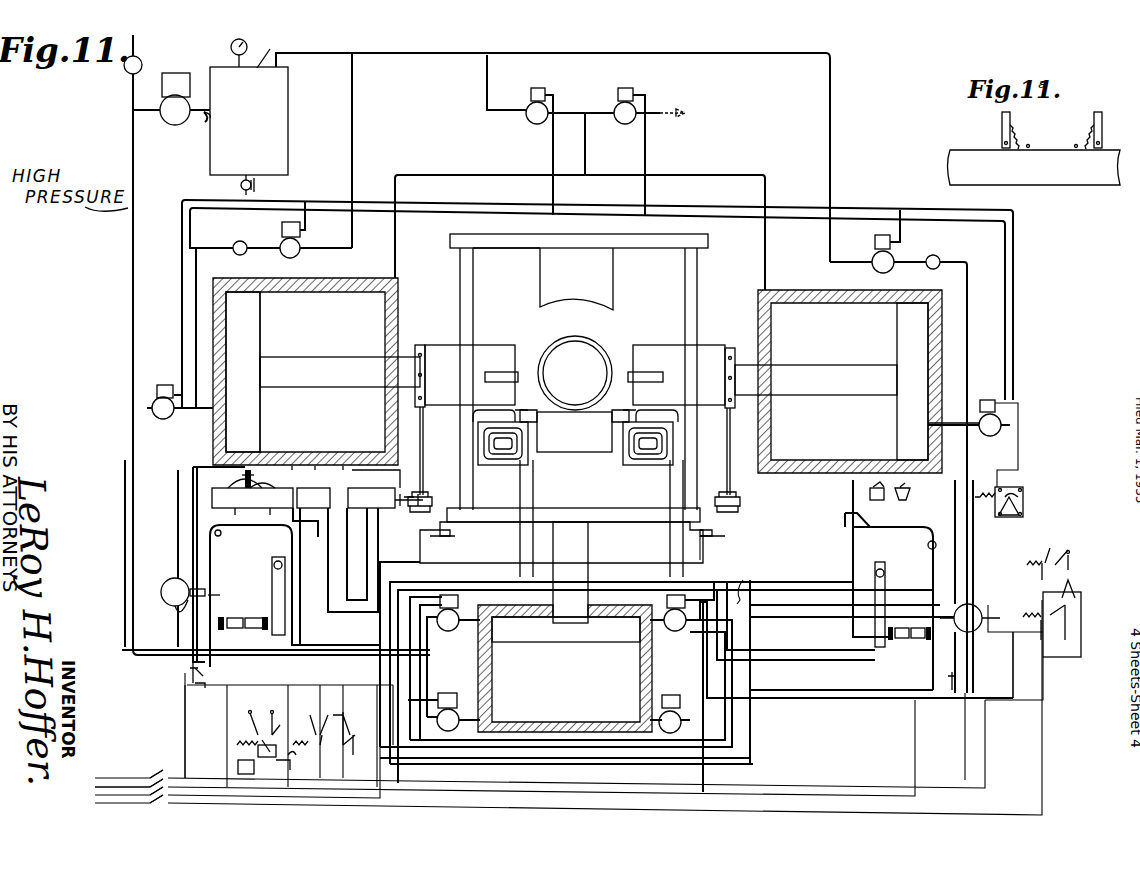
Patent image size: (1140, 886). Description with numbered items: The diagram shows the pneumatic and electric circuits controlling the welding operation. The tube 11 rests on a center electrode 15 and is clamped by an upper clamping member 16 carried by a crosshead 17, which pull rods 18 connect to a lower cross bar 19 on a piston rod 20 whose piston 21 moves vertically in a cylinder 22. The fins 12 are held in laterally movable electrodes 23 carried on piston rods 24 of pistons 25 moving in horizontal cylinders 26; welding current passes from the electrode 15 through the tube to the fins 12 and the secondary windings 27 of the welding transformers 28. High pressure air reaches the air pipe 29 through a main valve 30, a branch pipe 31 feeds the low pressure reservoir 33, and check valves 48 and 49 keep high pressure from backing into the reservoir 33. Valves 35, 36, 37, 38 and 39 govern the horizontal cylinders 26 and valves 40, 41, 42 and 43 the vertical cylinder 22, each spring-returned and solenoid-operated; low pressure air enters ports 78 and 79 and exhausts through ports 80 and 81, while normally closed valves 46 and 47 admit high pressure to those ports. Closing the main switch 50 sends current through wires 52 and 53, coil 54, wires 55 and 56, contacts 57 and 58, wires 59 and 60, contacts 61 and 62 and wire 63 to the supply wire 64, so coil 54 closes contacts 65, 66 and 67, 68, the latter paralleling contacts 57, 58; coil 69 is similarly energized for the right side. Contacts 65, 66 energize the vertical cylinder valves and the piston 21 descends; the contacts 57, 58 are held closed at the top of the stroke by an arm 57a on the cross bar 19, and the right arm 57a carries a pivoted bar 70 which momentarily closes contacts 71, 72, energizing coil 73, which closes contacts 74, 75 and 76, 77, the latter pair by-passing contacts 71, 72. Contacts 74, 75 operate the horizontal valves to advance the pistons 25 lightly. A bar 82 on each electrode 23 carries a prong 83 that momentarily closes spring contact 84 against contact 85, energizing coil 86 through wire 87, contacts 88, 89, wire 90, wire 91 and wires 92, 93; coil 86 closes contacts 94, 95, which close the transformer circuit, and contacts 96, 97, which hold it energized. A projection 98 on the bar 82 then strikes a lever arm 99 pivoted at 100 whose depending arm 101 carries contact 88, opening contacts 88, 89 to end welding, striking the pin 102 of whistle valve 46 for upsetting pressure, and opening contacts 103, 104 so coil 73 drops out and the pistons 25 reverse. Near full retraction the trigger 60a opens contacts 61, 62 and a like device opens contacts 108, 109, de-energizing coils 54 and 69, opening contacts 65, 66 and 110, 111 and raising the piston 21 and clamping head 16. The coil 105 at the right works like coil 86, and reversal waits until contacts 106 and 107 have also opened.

In FIG. 11, the tube 11 is at (572, 405).
In FIG. 11, the fins 12 is at (485, 377).
In FIG. 11, the center electrode 15 is at (574, 431).
In FIG. 11, the clamping member 16 is at (576, 279).
In FIG. 11, the crosshead 17 is at (505, 248).
In FIG. 11, the pull rods 18 is at (460, 292).
In FIG. 11, the lower cross bar 19 is at (570, 516).
In FIG. 11, the piston rod 20 is at (570, 572).
In FIG. 11, the piston 21 is at (568, 642).
In FIG. 11, the cylinder 22 is at (565, 668).
In FIG. 11, the laterally movable electrodes 23 is at (435, 348).
In FIG. 11, the piston rods 24 is at (578, 376).
In FIG. 11, the pistons 25 is at (250, 438).
In FIG. 11, the cylinders 26 is at (305, 300).
In FIG. 11, the secondary windings 27 is at (478, 430).
In FIG. 11, the welding transformers 28 is at (486, 452).
In FIG. 11, the air pipe 29 is at (131, 110).
In FIG. 11, the main valve 30 is at (333, 51).
In FIG. 11, the branch pipe 31 is at (210, 120).
In FIG. 11, the reservoir 33 is at (249, 117).
In FIG. 11, the valve 35 is at (532, 122).
In FIG. 11, the valve 36 is at (622, 122).
In FIG. 11, the valve 37 is at (878, 270).
In FIG. 11, the valve 38 is at (162, 419).
In FIG. 11, the valve 39 is at (1001, 428).
In FIG. 11, the valve 40 is at (447, 631).
In FIG. 11, the valve 41 is at (671, 631).
In FIG. 11, the valve 42 is at (455, 700).
In FIG. 11, the valve 43 is at (674, 702).
In FIG. 11, the whistle valve 46 is at (172, 578).
In FIG. 11, the valve 47 is at (965, 632).
In FIG. 11, the check valve 48 is at (240, 241).
In FIG. 11, the check valve 49 is at (930, 268).
In FIG. 11, the main switch 50 is at (127, 70).
In FIG. 11, the wire 52 is at (176, 118).
In FIG. 11, the wire 53 is at (249, 768).
In FIG. 11, the coil 54 is at (294, 257).
In FIG. 11, the wire 55 is at (277, 768).
In FIG. 11, the wire 56 is at (293, 757).
In FIG. 11, the contact 57 is at (405, 536).
In FIG. 11, the arm 57a is at (577, 550).
In FIG. 11, the contact 58 is at (420, 510).
In FIG. 11, the wire 59 is at (376, 479).
In FIG. 11, the wire 60 is at (262, 495).
In FIG. 11, the trigger 60a is at (252, 493).
In FIG. 11A, the trigger 60a is at (1002, 118).
In FIG. 11, the contact 61 is at (271, 372).
In FIG. 11, the contact 62 is at (245, 476).
In FIG. 11, the wire 63 is at (193, 478).
In FIG. 11, the supply wire 64 is at (120, 803).
In FIG. 11, the contact 65 is at (245, 713).
In FIG. 11, the contact 66 is at (258, 745).
In FIG. 11, the contact 67 is at (284, 722).
In FIG. 11, the contact 68 is at (275, 745).
In FIG. 11, the coil 69 is at (310, 730).
In FIG. 11, the bar 70 is at (691, 557).
In FIG. 11, the contact 71 is at (750, 575).
In FIG. 11, the contact 72 is at (737, 604).
In FIG. 11, the coil 73 is at (1022, 482).
In FIG. 11, the contact 74 is at (1000, 488).
In FIG. 11, the contact 75 is at (1022, 513).
In FIG. 11, the contact 76 is at (1022, 495).
In FIG. 11, the contact 77 is at (1008, 499).
In FIG. 11, the port 78 is at (200, 418).
In FIG. 11, the port 79 is at (928, 426).
In FIG. 11, the port 80 is at (395, 278).
In FIG. 11, the port 81 is at (765, 290).
In FIG. 11, the bar 82 is at (385, 498).
In FIG. 11A, the bar 82 is at (1034, 167).
In FIG. 11, the prong 83 is at (270, 512).
In FIG. 11A, the prong 83 is at (1094, 118).
In FIG. 11, the spring contact 84 is at (295, 468).
In FIG. 11, the mating contact 85 is at (318, 468).
In FIG. 11, the coil 86 is at (1043, 680).
In FIG. 11, the wire 87 is at (227, 722).
In FIG. 11, the contact 88 is at (222, 625).
In FIG. 11, the contact 89 is at (258, 628).
In FIG. 11, the wire 90 is at (300, 590).
In FIG. 11, the wire 91 is at (345, 470).
In FIG. 11, the wire 92 is at (988, 632).
In FIG. 11, the wire 93 is at (1010, 688).
In FIG. 11, the contact 94 is at (1041, 615).
In FIG. 11, the contact 95 is at (1070, 560).
In FIG. 11, the contact 96 is at (1064, 598).
In FIG. 11, the contact 97 is at (1062, 624).
In FIG. 11, the projection 98 is at (313, 498).
In FIG. 11, the lever arm 99 is at (272, 532).
In FIG. 11, the pivot 100 is at (220, 537).
In FIG. 11, the depending arm 101 is at (220, 594).
In FIG. 11, the pin 102 is at (188, 608).
In FIG. 11, the contact 103 is at (200, 688).
In FIG. 11, the contact 104 is at (188, 672).
In FIG. 11, the coil 105 is at (1041, 559).
In FIG. 11, the contact 106 is at (952, 695).
In FIG. 11, the contact 107 is at (956, 688).
In FIG. 11, the contact 108 is at (890, 492).
In FIG. 11, the contact 109 is at (916, 492).
In FIG. 11, the contact 110 is at (345, 722).
In FIG. 11, the contact 111 is at (345, 740).